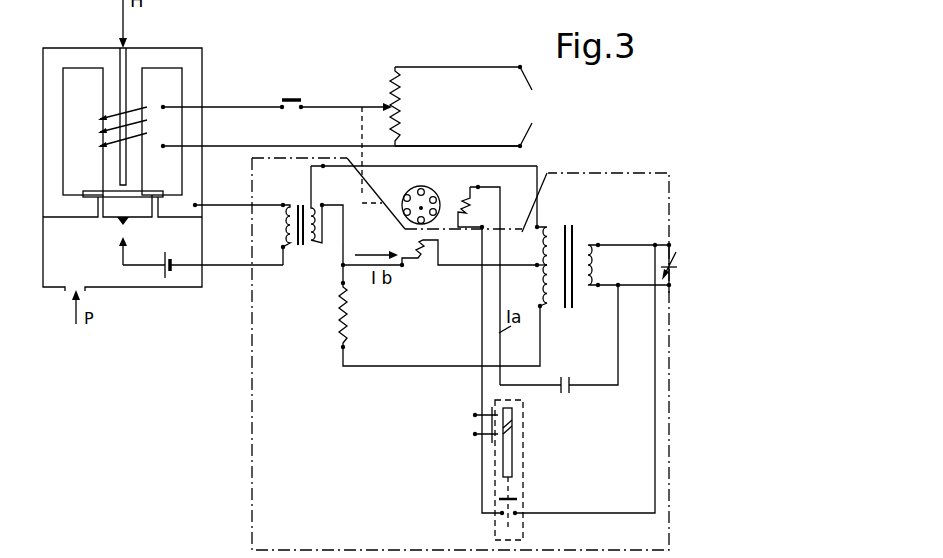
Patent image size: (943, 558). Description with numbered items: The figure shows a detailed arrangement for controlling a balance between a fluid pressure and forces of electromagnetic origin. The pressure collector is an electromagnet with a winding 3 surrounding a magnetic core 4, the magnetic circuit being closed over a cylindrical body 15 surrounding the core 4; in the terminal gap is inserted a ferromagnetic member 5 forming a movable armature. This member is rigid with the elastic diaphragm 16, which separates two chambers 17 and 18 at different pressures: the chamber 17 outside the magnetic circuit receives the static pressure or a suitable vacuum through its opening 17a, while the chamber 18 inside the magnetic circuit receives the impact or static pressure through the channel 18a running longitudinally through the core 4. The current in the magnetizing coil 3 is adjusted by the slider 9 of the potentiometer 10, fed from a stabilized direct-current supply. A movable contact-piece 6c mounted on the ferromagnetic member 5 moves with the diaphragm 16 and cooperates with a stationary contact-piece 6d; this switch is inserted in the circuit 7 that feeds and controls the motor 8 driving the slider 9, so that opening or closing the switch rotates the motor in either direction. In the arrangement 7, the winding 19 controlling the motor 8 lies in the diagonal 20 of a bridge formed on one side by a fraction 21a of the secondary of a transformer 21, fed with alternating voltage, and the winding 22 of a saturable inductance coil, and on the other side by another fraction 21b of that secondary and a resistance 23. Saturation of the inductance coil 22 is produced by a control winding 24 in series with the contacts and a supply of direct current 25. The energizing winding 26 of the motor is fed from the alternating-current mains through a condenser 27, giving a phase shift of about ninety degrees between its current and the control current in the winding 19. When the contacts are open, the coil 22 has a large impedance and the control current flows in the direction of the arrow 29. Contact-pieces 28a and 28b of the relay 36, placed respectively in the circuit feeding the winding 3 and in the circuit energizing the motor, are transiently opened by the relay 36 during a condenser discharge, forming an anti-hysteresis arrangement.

The winding 3 is at (100, 131).
The magnetic core 4 is at (113, 102).
The ferromagnetic member 5 is at (132, 207).
The movable contact-piece 6c is at (120, 227).
The stationary contact-piece 6d is at (130, 240).
The circuit 7 is at (251, 445).
The motor 8 is at (406, 195).
The slider 9 is at (369, 106).
The potentiometer 10 is at (398, 93).
The cylindrical body 15 is at (193, 85).
The elastic diaphragm 16 is at (151, 191).
The chamber 17 is at (112, 267).
The opening 17a is at (65, 291).
The chamber 18 is at (172, 181).
The channel 18a is at (122, 75).
The winding 19 is at (422, 258).
The diagonal 20 is at (515, 262).
The transformer 21 is at (573, 231).
The fraction of the secondary winding 21a is at (549, 223).
The fraction of the secondary winding 21b is at (557, 307).
The winding of inductance coil 22 is at (313, 193).
The resistance 23 is at (337, 332).
The control winding 24 is at (312, 243).
The supply of direct current 25 is at (168, 273).
The energizing winding 26 is at (468, 205).
The condenser 27 is at (567, 395).
The contact-piece 28a is at (296, 96).
The contact-piece 28b is at (515, 503).
The arrow 29 is at (372, 252).
The relay 36 is at (492, 520).